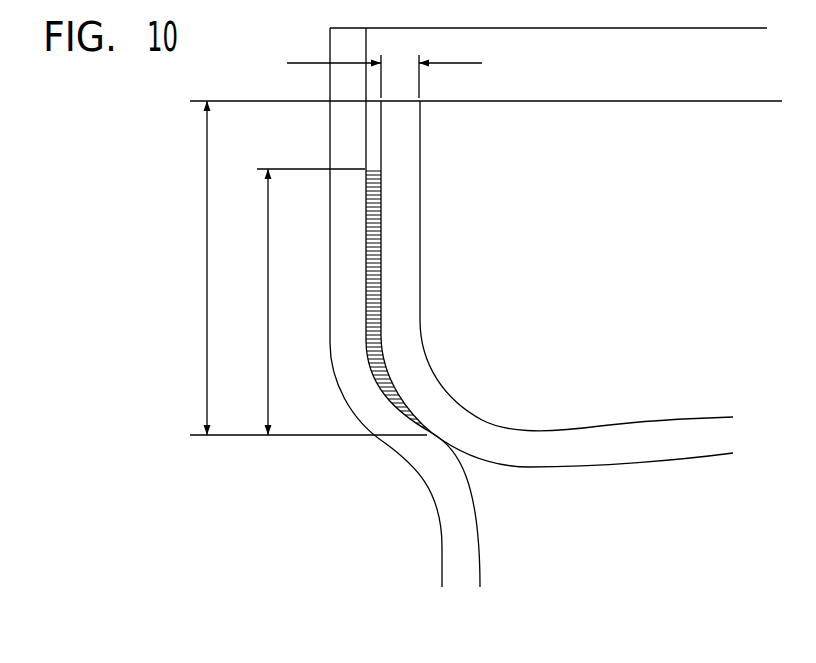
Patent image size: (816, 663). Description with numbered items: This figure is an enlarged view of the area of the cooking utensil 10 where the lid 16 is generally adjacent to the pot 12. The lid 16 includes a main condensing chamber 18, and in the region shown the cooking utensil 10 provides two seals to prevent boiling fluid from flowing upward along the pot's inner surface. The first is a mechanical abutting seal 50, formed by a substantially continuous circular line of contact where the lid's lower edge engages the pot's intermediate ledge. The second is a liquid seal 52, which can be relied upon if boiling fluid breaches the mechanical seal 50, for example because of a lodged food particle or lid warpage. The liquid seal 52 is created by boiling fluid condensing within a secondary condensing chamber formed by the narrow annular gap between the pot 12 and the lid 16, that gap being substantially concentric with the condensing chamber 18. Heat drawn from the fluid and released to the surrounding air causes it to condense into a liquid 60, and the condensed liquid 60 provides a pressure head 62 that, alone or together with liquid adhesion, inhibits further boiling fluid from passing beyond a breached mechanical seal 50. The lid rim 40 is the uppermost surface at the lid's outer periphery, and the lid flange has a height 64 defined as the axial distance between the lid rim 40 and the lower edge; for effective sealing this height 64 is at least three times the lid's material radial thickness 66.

The cooking utensil 10 is at (107, 175).
The pot 12 is at (440, 554).
The lid 16 is at (597, 420).
The condensing chamber 18 is at (625, 536).
The lid rim 40 is at (602, 101).
The mechanical abutting seal 50 is at (432, 433).
The liquid seal 52 is at (390, 284).
The liquid 60 is at (375, 168).
The pressure head 62 is at (207, 348).
The height 64 is at (268, 298).
The material radial thickness 66 is at (453, 63).